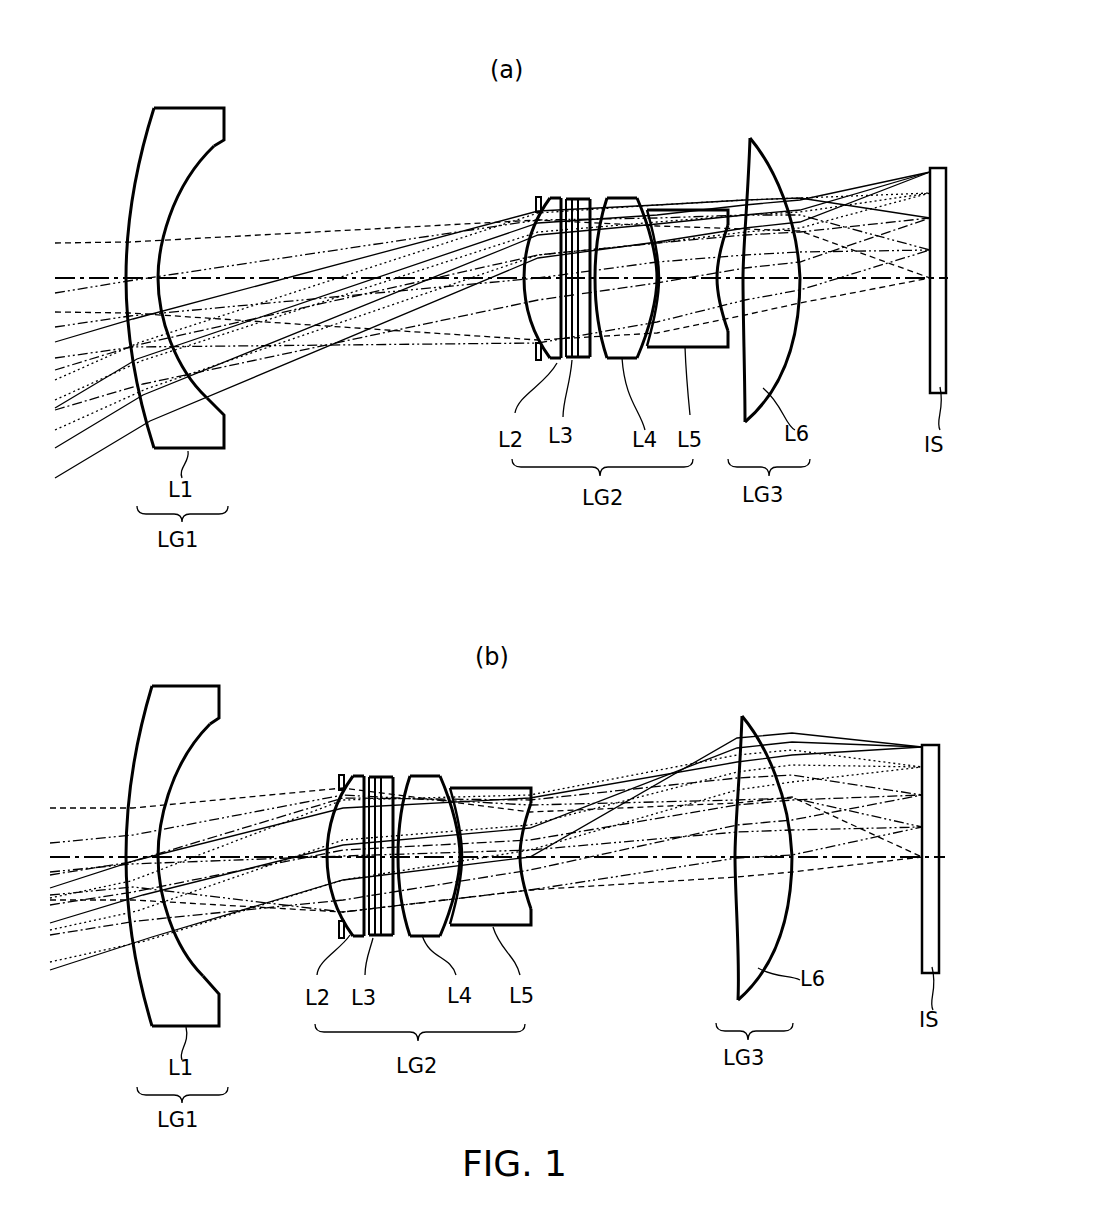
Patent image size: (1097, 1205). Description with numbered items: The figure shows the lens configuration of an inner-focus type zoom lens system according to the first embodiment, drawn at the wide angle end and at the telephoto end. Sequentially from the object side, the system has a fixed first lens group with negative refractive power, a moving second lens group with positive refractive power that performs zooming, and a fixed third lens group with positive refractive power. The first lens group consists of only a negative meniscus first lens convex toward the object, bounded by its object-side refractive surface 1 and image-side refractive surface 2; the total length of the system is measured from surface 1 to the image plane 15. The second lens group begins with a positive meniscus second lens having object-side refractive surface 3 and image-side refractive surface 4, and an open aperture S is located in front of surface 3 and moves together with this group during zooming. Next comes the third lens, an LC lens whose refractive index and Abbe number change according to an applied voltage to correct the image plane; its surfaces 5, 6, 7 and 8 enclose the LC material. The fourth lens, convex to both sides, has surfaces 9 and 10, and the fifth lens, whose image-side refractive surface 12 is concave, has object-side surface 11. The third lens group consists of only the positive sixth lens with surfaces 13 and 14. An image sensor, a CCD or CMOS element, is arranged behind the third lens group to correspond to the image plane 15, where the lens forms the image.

The object-side refractive surface of the first lens 1 is at (143, 146).
The image-side refractive surface of the first lens 2 is at (212, 162).
The object-side refractive surface of the second lens 3 is at (547, 198).
The image-side refractive surface of the second lens 4 is at (565, 202).
The object-side surface of the LC lens 5 is at (545, 221).
The first inner surface of the LC lens 6 is at (545, 277).
The second inner surface of the LC lens 7 is at (580, 252).
The image-side surface of the LC lens 8 is at (592, 312).
The object-side refractive surface of the fourth lens 9 is at (600, 198).
The image-side refractive surface of the fourth lens 10 is at (659, 237).
The object-side refractive surface of the fifth lens 11 is at (685, 248).
The image-side refractive surface of the fifth lens 12 is at (728, 223).
The object-side refractive surface of the sixth lens 13 is at (753, 138).
The image-side refractive surface of the sixth lens 14 is at (780, 168).
The image plane 15 is at (930, 198).
The open aperture S is at (536, 207).